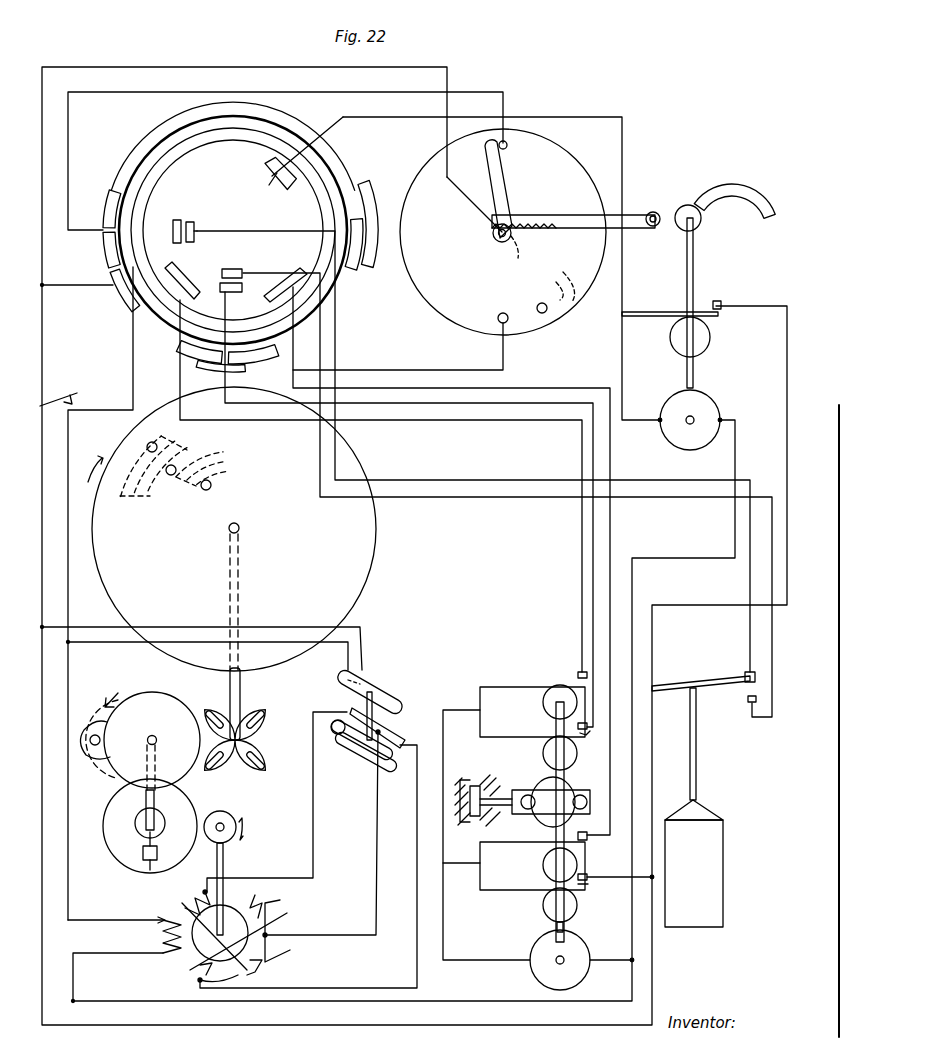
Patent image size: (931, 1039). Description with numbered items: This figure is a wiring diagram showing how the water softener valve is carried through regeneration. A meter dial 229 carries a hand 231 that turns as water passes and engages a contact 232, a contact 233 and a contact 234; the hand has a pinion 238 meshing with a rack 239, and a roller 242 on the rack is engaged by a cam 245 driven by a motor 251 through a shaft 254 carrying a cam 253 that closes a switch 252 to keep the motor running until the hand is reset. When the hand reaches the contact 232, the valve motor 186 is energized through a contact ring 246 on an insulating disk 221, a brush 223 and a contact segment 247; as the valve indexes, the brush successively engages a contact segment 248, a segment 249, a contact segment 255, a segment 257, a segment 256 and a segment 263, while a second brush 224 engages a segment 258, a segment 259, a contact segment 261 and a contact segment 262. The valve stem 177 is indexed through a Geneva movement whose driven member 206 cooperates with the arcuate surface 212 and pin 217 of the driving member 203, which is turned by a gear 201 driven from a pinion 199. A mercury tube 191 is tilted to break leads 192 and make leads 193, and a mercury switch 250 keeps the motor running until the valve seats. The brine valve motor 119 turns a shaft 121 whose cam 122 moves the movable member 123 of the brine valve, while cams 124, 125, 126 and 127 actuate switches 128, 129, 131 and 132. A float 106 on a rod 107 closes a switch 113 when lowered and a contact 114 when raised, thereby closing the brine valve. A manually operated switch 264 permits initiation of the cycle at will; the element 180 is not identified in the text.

The float 106 is at (717, 832).
The rod 107 is at (697, 772).
The switch 113 is at (748, 702).
The contact 114 is at (746, 672).
The motor 119 is at (578, 942).
The shaft 121 is at (563, 788).
The cam 122 is at (538, 816).
The movable member of valve 123 is at (480, 778).
The cam 124 is at (545, 912).
The cam 125 is at (545, 865).
The cam 126 is at (545, 753).
The cam 127 is at (545, 708).
The switch 128 is at (588, 874).
The switch 129 is at (584, 826).
The switch 131 is at (594, 739).
The switch 132 is at (578, 670).
The valve stem 177 is at (230, 687).
The contact wheel 180 is at (272, 913).
The motor 186 is at (245, 980).
The mercury tube 191 is at (356, 757).
The leads 192 is at (412, 745).
The leads 193 is at (345, 735).
The pinion 199 is at (236, 815).
The gear 201 is at (118, 853).
The driving member of Geneva movement 203 is at (143, 741).
The second member of Geneva movement 206 is at (254, 712).
The arcuate surface 212 is at (178, 698).
The pin 217 is at (98, 748).
The disk 221 is at (233, 230).
The brush 223 is at (142, 530).
The brush 224 is at (218, 492).
The dial 229 is at (556, 158).
The hand 231 is at (503, 182).
The contact 232 is at (508, 147).
The contact 233 is at (503, 312).
The contact 234 is at (547, 313).
The pinion 238 is at (522, 249).
The rack 239 is at (574, 228).
The roller 242 is at (654, 211).
The cam 245 is at (712, 188).
The contact ring 246 is at (290, 130).
The contact segment 247 is at (101, 245).
The contact segment 248 is at (170, 126).
The segment 249 is at (277, 181).
The mercury switch 250 is at (388, 698).
The motor 251 is at (700, 410).
The switch 252 is at (717, 300).
The cam 253 is at (710, 333).
The shaft 254 is at (686, 265).
The contact segment 255 is at (362, 250).
The segment 256 is at (248, 364).
The segment 257 is at (293, 270).
The segment 258 is at (232, 268).
The contact 259 is at (220, 288).
The contact segment 261 is at (192, 222).
The contact segment 262 is at (177, 218).
The segment 263 is at (170, 268).
The manually operated switch 264 is at (60, 386).